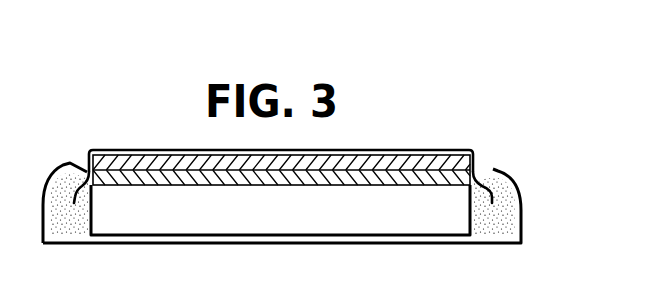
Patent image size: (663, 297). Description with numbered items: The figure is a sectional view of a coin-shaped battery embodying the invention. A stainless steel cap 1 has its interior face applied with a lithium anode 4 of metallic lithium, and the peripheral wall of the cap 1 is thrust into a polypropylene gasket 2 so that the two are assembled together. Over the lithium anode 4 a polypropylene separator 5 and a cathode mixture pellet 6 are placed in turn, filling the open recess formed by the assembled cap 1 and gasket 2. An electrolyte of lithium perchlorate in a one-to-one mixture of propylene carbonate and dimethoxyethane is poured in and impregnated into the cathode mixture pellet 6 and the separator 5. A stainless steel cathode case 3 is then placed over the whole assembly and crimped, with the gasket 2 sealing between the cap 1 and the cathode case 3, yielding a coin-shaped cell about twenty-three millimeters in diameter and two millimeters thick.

The cap 1 is at (470, 152).
The gasket 2 is at (519, 210).
The cathode case 3 is at (470, 238).
The lithium anode 4 is at (432, 162).
The separator 5 is at (480, 162).
The cathode mixture pellet 6 is at (392, 222).